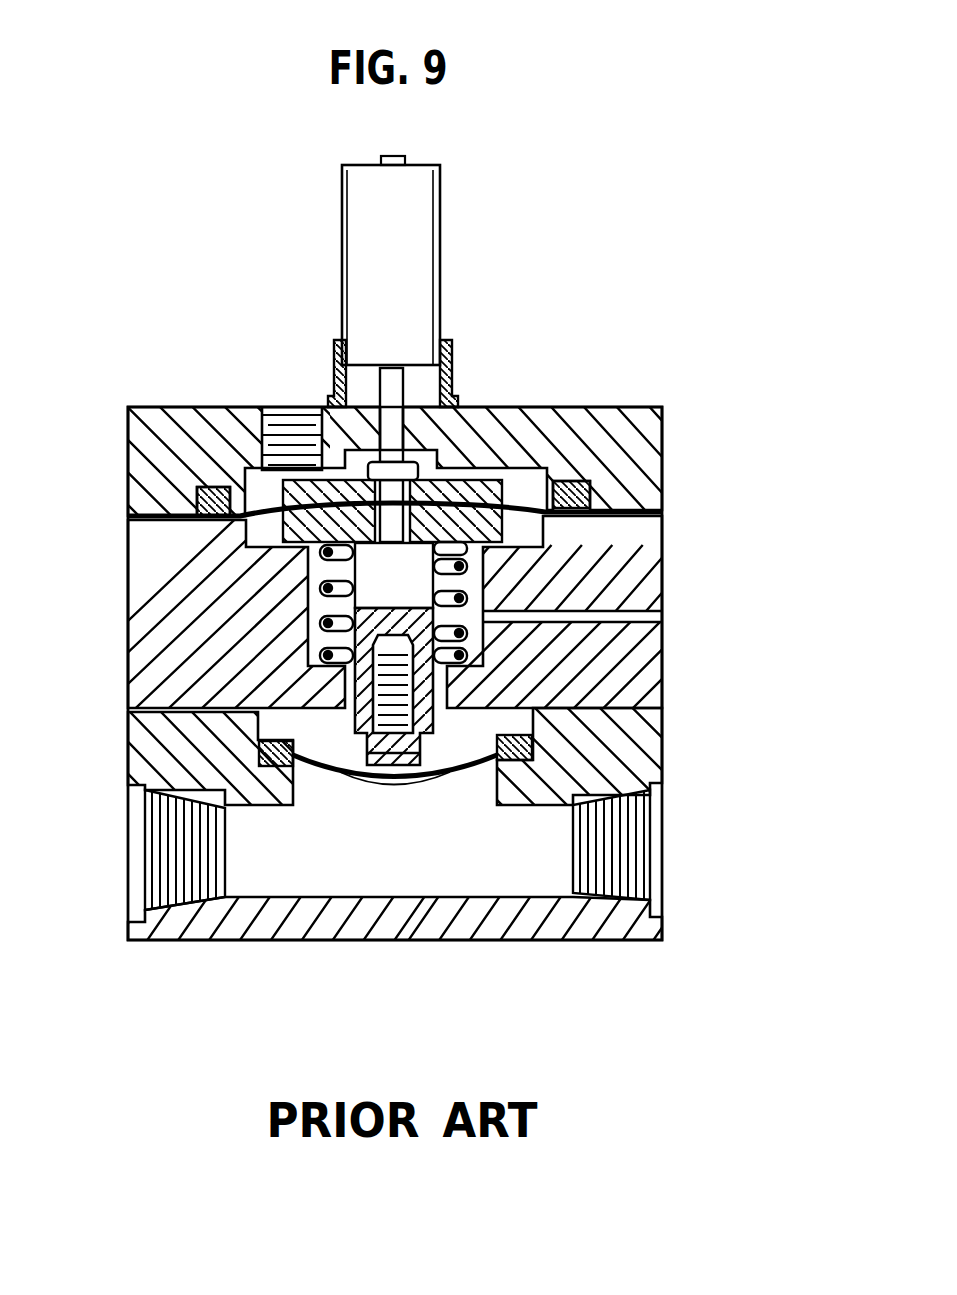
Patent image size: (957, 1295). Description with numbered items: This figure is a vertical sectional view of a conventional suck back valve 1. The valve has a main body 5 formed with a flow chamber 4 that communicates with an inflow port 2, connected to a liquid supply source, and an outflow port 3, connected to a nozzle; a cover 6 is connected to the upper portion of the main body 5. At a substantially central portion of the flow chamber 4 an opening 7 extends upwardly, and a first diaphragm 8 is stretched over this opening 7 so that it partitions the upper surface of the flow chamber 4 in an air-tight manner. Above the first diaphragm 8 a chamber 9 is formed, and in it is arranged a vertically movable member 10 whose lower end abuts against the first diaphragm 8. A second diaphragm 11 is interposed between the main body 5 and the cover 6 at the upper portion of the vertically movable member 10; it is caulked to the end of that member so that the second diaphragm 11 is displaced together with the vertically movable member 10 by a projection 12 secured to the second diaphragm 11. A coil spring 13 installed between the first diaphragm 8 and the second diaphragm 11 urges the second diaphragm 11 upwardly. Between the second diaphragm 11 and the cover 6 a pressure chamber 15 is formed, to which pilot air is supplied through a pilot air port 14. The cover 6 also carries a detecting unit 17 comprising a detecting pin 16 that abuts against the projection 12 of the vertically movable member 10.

The suck back valve 1 is at (401, 566).
The inflow port 2 is at (160, 858).
The outflow port 3 is at (633, 833).
The flow chamber 4 is at (407, 855).
The main body 5 is at (125, 622).
The cover 6 is at (205, 432).
The opening 7 is at (322, 808).
The first diaphragm 8 is at (470, 772).
The chamber 9 is at (455, 740).
The vertically movable member 10 is at (455, 668).
The second diaphragm 11 is at (620, 500).
The projection 12 is at (400, 470).
The coil spring 13 is at (465, 560).
The pilot air port 14 is at (285, 425).
The pressure chamber 15 is at (260, 495).
The detecting pin 16 is at (433, 388).
The detecting unit 17 is at (405, 243).